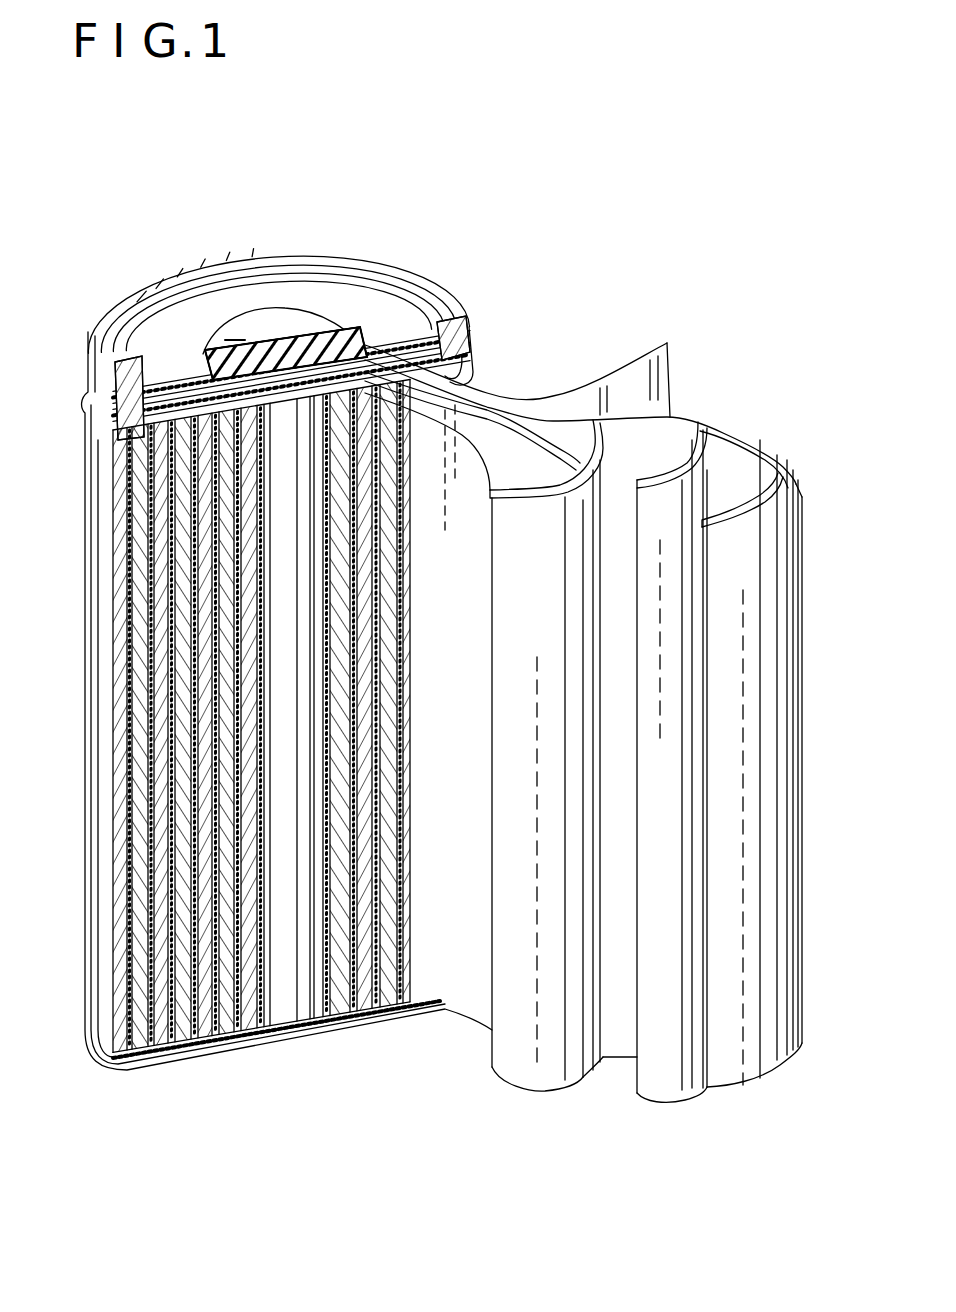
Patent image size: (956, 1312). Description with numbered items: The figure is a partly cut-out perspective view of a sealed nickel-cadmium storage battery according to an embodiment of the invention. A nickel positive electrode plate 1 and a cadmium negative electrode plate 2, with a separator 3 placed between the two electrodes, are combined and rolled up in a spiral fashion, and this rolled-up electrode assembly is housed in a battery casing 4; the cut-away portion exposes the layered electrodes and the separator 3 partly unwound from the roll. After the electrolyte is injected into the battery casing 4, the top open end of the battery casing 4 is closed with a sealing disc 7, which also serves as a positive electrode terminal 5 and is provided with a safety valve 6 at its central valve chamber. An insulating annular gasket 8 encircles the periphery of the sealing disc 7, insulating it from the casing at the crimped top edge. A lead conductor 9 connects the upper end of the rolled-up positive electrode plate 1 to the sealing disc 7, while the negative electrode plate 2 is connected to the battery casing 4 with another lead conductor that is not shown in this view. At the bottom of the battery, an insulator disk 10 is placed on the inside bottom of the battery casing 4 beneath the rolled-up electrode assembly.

The nickel positive electrode plate 1 is at (580, 938).
The cadmium negative electrode plate 2 is at (778, 631).
The separator 3 is at (682, 772).
The battery casing 4 is at (97, 782).
The positive electrode terminal 5 is at (247, 323).
The safety valve 6 is at (280, 347).
The sealing disc 7 is at (412, 325).
The insulating annular gasket 8 is at (88, 350).
The lead conductor 9 is at (110, 420).
The insulator disk 10 is at (260, 1047).